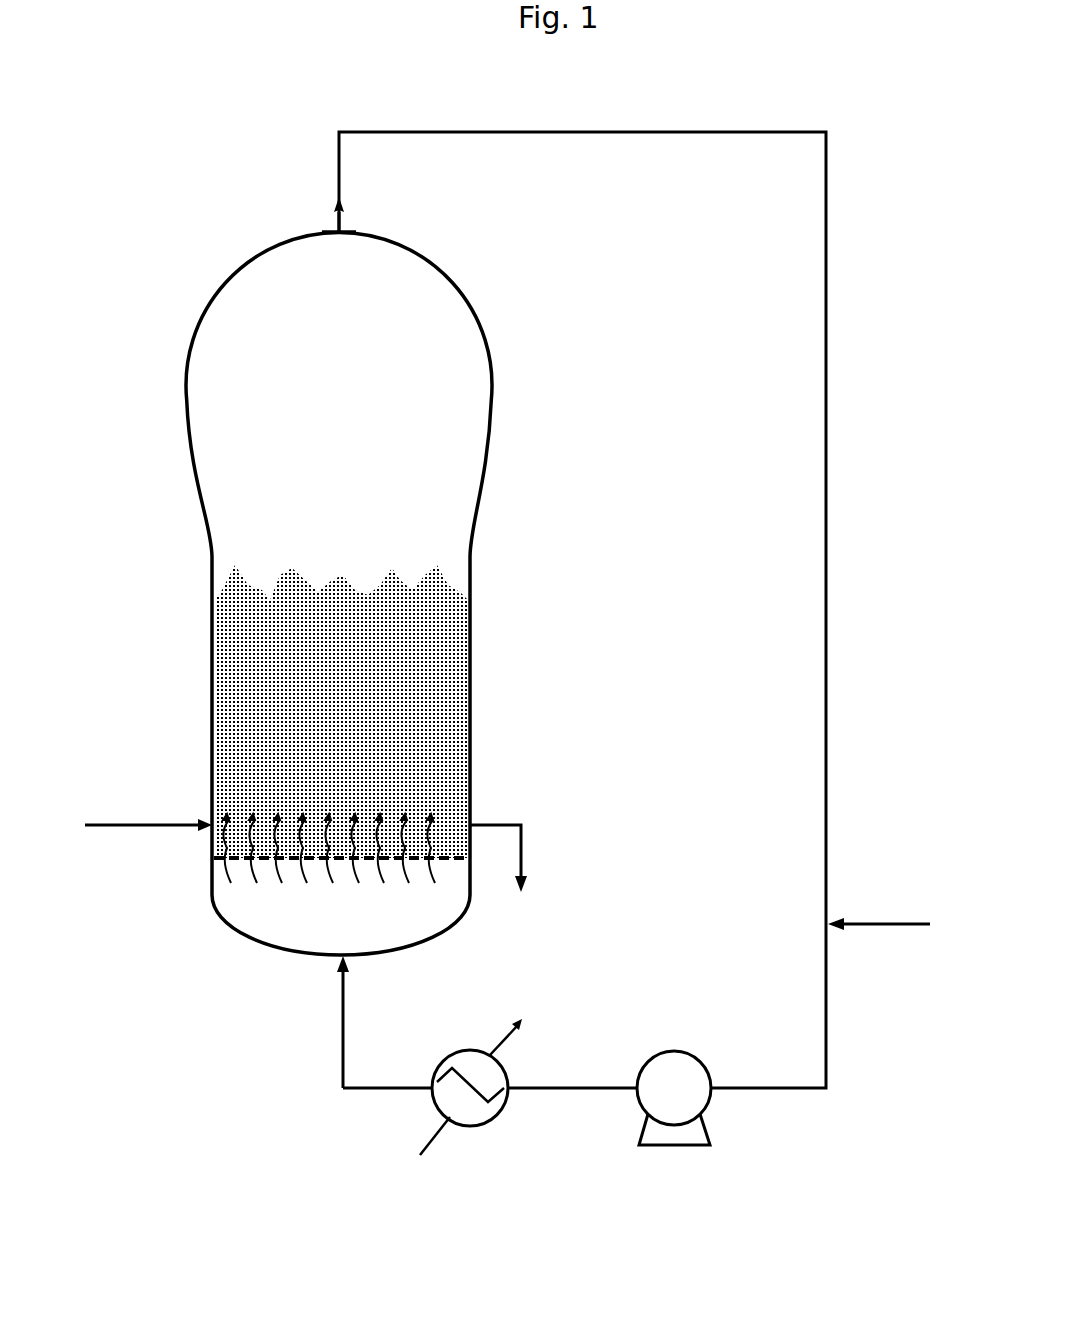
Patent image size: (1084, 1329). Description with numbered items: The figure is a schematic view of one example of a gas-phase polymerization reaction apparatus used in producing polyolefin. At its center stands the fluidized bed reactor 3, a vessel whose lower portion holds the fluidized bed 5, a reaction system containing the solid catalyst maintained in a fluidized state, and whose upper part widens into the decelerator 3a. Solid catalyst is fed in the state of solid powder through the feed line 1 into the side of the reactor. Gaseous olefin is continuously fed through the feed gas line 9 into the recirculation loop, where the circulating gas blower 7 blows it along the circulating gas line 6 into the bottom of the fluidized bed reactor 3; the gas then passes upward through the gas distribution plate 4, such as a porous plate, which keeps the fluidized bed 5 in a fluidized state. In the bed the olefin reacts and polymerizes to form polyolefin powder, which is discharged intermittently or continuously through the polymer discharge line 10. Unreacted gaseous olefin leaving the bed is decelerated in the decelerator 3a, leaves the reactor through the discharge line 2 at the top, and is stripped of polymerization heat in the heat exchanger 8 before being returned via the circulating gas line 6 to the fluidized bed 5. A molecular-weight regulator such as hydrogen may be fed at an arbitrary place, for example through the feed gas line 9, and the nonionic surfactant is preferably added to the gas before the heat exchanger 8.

The feed line 1 is at (167, 822).
The discharge line 2 is at (336, 167).
The fluidized bed reactor 3 is at (235, 273).
The decelerator 3a is at (372, 411).
The gas distribution plate 4 is at (212, 868).
The fluidized bed 5 is at (361, 675).
The circulating gas line 6 is at (342, 1057).
The circulating gas blower 7 is at (710, 1147).
The heat exchanger 8 is at (494, 1117).
The feed gas line 9 is at (906, 922).
The polymer discharge line 10 is at (522, 857).